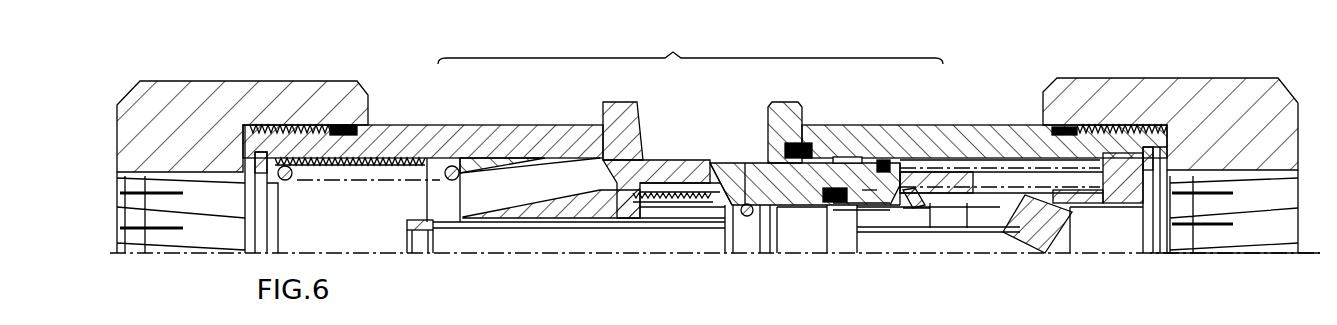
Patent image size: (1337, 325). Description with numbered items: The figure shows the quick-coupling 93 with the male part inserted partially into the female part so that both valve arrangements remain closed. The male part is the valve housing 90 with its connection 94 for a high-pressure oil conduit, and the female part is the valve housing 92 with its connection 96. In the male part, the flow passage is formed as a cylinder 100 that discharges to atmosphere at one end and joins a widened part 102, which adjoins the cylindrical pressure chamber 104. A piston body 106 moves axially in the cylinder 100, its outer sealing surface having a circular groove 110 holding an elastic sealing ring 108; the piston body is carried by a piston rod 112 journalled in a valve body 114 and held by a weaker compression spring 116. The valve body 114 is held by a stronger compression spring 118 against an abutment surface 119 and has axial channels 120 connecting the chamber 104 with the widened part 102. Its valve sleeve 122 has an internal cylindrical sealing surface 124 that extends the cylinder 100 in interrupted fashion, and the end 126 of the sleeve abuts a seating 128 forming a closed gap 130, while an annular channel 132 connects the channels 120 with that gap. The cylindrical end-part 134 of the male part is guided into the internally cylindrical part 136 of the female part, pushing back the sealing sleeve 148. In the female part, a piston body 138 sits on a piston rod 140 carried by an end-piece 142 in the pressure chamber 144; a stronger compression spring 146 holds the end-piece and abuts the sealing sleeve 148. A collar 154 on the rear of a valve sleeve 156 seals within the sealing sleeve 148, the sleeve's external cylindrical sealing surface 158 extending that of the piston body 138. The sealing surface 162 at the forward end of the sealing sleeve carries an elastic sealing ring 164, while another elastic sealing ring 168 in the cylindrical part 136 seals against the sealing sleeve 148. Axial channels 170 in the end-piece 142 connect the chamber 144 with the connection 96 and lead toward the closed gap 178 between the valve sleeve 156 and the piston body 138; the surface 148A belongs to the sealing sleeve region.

The valve housing 90 is at (293, 92).
The valve housing 92 is at (1020, 130).
The quick-coupling 93 is at (690, 42).
The connection 94 is at (228, 243).
The connection 96 is at (1267, 240).
The cylinder 100 is at (780, 160).
The widened part 102 is at (630, 188).
The pressure chamber 104 is at (301, 241).
The piston body 106 is at (758, 240).
The elastic sealing ring 108 is at (729, 222).
The circular groove 110 is at (766, 210).
The piston rod 112 is at (540, 242).
The valve body 114 is at (582, 195).
The weaker compression spring 116 is at (490, 223).
The stronger compression spring 118 is at (294, 182).
The abutment surface 119 is at (600, 128).
The axial channels 120 is at (492, 196).
The valve sleeve 122 is at (648, 223).
The internal cylindrical sealing surface 124 is at (692, 223).
The end of valve sleeve 126 is at (746, 217).
The seating 128 is at (769, 145).
The closed gap 130 is at (722, 192).
The channel 132 is at (658, 187).
The cylindrical end-part 134 is at (758, 175).
The internally cylindrical part 136 is at (850, 150).
The piston body 138 is at (852, 208).
The piston rod 140 is at (972, 246).
The end-piece 142 is at (1145, 212).
The pressure chamber 144 is at (985, 222).
The stronger compression spring 146 is at (973, 157).
The sealing sleeve 148 is at (900, 160).
The cylinder wall 148A is at (905, 150).
The collar 154 is at (920, 204).
The valve sleeve 156 is at (865, 207).
The external cylindrical sealing surface 158 is at (903, 235).
The sealing surface 162 is at (786, 206).
The elastic sealing ring 164 is at (878, 245).
The elastic sealing ring 168 is at (805, 143).
The axial channels 170 is at (1115, 205).
The closed gap 178 is at (862, 215).